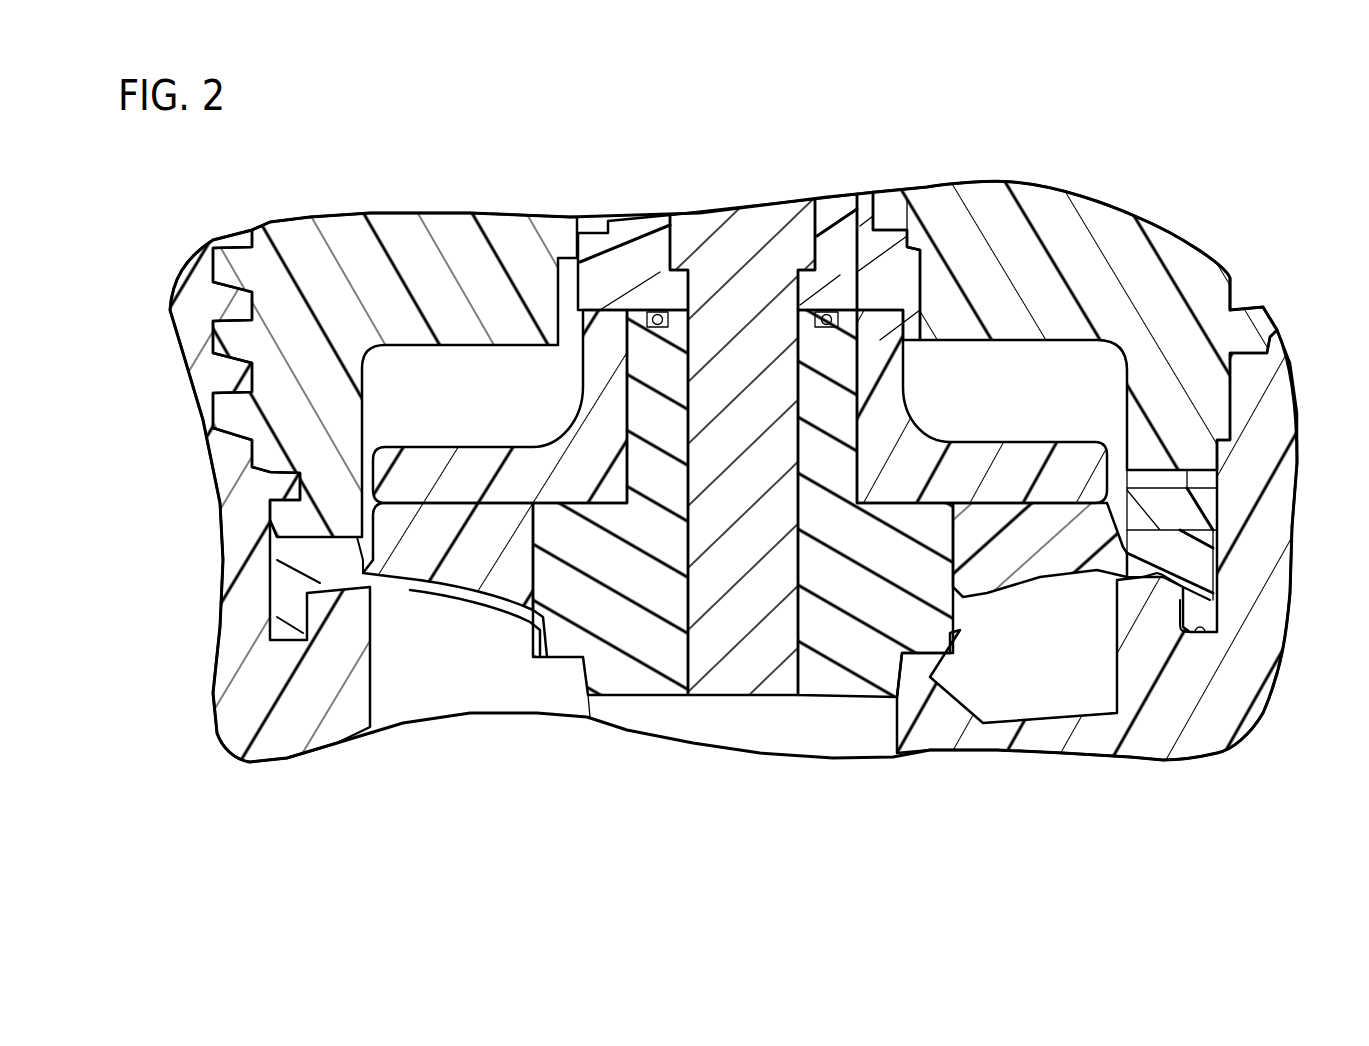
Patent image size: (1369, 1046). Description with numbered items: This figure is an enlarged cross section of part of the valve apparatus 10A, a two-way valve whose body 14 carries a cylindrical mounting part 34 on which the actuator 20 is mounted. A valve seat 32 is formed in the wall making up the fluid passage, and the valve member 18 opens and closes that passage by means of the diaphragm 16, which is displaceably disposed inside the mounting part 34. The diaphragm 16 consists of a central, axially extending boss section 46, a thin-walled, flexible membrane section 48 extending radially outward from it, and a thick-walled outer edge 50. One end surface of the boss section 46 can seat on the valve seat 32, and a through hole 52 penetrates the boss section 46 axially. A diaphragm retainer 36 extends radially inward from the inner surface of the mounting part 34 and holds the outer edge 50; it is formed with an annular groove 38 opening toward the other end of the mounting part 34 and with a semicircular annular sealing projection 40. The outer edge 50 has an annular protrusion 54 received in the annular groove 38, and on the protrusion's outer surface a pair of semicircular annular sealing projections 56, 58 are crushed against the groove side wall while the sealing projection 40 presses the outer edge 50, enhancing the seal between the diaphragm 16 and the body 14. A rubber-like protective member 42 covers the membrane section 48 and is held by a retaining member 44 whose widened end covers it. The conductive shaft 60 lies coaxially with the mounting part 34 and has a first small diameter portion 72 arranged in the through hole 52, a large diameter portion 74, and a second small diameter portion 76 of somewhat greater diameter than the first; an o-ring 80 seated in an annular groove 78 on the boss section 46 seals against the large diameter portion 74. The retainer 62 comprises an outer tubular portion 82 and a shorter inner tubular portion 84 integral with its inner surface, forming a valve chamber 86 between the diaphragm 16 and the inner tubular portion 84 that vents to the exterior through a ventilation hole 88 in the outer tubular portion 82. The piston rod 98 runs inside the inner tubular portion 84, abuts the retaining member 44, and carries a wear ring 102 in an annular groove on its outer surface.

The valve apparatus 10A is at (296, 151).
The body 14 is at (1258, 738).
The diaphragm 16 is at (853, 696).
The valve member 18 is at (955, 395).
The actuator 20 is at (770, 205).
The valve seat 32 is at (922, 638).
The mounting part 34 is at (1283, 413).
The diaphragm retainer 36 is at (1128, 618).
The annular groove 38 is at (1198, 633).
The annular sealing projection 40 is at (1165, 576).
The protective member 42 is at (1043, 560).
The retaining member 44 is at (1020, 442).
The boss section 46 is at (655, 697).
The membrane section 48 is at (451, 590).
The outer edge 50 is at (1200, 549).
The through hole 52 is at (797, 438).
The annular protrusion 54 is at (290, 622).
The annular sealing projection 56 is at (1213, 628).
The annular sealing projection 58 is at (1210, 590).
The conductive shaft 60 is at (783, 696).
The retainer 62 is at (1185, 258).
The first small diameter portion 72 is at (748, 696).
The large diameter portion 74 is at (838, 283).
The second small diameter portion 76 is at (730, 228).
The annular groove 78 is at (664, 314).
The o-ring 80 is at (822, 321).
The outer tubular portion 82 is at (1223, 330).
The inner tubular portion 84 is at (988, 210).
The valve chamber 86 is at (1097, 365).
The ventilation hole 88 is at (1200, 484).
The piston rod 98 is at (627, 232).
The wear ring 102 is at (885, 205).